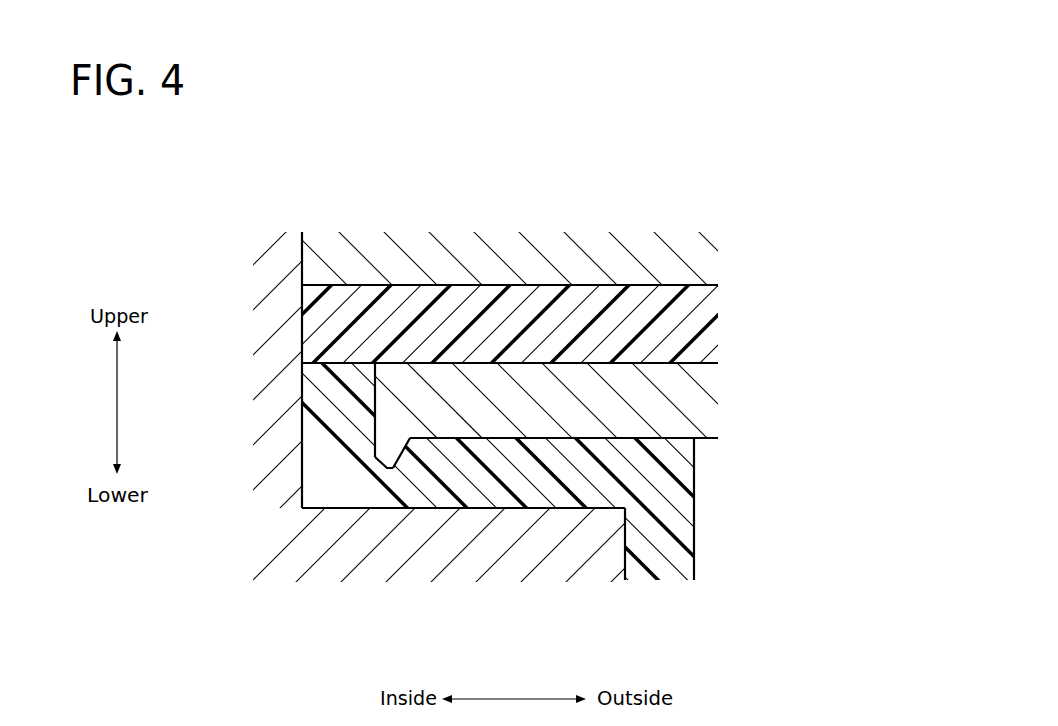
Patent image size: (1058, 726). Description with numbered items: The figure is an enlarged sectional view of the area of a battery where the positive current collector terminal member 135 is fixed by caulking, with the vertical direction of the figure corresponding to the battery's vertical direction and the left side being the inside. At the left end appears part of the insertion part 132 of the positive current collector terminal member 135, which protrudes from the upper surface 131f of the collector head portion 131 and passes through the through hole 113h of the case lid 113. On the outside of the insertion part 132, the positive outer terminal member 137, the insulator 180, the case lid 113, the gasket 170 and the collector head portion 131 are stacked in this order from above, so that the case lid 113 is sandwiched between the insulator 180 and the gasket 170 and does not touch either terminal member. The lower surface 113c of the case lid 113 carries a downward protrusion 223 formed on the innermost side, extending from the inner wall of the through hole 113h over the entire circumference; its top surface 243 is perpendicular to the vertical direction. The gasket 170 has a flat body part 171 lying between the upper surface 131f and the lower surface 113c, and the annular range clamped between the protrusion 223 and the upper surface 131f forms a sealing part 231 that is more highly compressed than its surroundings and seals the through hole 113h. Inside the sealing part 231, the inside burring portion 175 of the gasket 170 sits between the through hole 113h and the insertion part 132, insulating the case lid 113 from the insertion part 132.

The positive current collector terminal member 135 is at (257, 229).
The positive outer terminal member 137 is at (678, 263).
The insulator 180 is at (693, 317).
The insertion part 132 is at (262, 367).
The inside burring portion 175 is at (332, 393).
The case lid 113 is at (662, 407).
The through hole 113h is at (373, 410).
The lower surface 113c is at (626, 440).
The gasket 170 is at (670, 515).
The body part 171 is at (546, 488).
The protrusion 223 is at (388, 452).
The top surface 243 is at (390, 481).
The upper surface 131f is at (333, 507).
The sealing part 231 is at (383, 500).
The collector head portion 131 is at (500, 553).